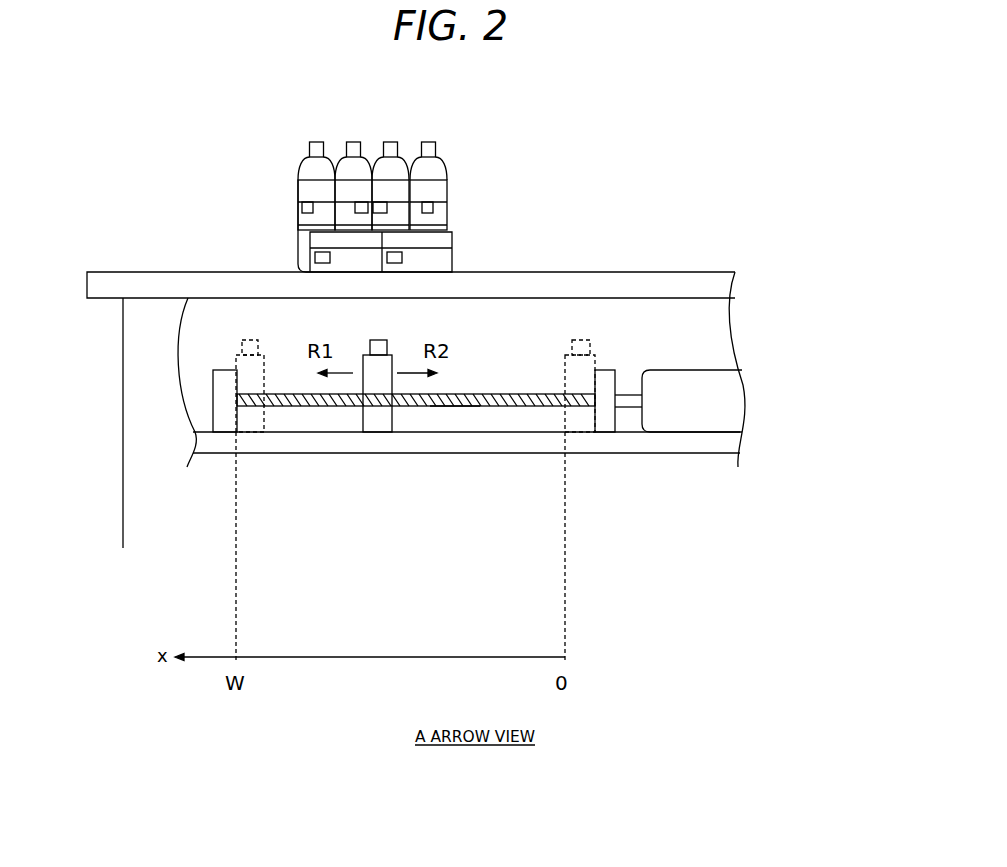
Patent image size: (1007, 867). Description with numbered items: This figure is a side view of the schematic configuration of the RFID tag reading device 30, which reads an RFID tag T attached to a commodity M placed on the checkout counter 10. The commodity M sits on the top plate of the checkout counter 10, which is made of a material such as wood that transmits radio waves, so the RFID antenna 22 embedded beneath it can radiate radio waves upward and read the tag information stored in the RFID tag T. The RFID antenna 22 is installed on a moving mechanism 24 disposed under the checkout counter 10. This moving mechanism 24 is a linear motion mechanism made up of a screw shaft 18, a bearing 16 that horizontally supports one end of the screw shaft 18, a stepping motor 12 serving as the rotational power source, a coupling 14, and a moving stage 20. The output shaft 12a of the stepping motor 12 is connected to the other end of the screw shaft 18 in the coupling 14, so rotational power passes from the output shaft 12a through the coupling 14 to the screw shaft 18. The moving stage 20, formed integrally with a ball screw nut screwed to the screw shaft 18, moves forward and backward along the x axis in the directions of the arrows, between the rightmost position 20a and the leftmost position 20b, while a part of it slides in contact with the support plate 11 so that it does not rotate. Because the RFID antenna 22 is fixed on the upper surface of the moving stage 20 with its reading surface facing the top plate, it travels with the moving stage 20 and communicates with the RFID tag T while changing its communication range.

The checkout counter 10 is at (120, 272).
The support plate 11 is at (687, 453).
The stepping motor 12 is at (697, 370).
The output shaft 12a is at (632, 392).
The coupling 14 is at (616, 418).
The bearing 16 is at (238, 420).
The screw shaft 18 is at (522, 407).
The moving stage 20 is at (392, 418).
The rightmost position 20a is at (565, 370).
The leftmost position 20b is at (263, 370).
The RFID antenna 22 is at (382, 340).
The moving mechanism 24 is at (458, 410).
The RFID tag reading device 30 is at (642, 232).
The commodity M is at (447, 158).
The RFID tag T is at (313, 258).